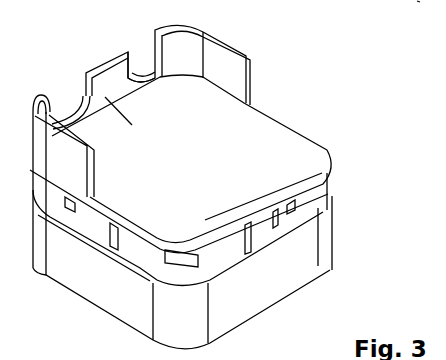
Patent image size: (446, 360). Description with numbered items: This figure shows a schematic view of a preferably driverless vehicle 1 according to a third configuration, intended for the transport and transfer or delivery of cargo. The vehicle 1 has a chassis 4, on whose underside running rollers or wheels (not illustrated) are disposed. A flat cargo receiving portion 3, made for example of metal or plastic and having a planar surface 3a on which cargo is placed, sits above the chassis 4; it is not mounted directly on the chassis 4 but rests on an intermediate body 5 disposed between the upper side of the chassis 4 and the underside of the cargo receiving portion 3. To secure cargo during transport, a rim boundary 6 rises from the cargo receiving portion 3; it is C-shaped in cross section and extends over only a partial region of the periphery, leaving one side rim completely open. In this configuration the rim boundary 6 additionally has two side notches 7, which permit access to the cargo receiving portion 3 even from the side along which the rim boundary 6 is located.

The vehicle 1 is at (337, 6).
The cargo receiving portion 3 is at (209, 126).
The surface 3a is at (218, 179).
The chassis 4 is at (333, 249).
The intermediate body 5 is at (330, 205).
The rim boundary 6 is at (135, 126).
The side notches 7 is at (70, 102).